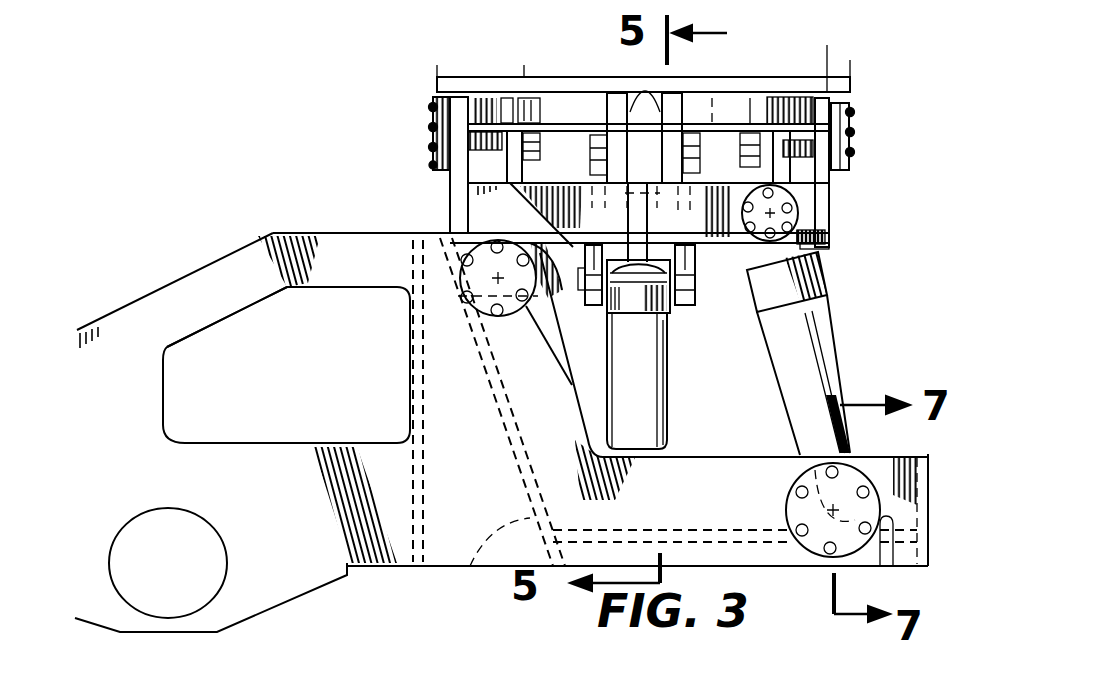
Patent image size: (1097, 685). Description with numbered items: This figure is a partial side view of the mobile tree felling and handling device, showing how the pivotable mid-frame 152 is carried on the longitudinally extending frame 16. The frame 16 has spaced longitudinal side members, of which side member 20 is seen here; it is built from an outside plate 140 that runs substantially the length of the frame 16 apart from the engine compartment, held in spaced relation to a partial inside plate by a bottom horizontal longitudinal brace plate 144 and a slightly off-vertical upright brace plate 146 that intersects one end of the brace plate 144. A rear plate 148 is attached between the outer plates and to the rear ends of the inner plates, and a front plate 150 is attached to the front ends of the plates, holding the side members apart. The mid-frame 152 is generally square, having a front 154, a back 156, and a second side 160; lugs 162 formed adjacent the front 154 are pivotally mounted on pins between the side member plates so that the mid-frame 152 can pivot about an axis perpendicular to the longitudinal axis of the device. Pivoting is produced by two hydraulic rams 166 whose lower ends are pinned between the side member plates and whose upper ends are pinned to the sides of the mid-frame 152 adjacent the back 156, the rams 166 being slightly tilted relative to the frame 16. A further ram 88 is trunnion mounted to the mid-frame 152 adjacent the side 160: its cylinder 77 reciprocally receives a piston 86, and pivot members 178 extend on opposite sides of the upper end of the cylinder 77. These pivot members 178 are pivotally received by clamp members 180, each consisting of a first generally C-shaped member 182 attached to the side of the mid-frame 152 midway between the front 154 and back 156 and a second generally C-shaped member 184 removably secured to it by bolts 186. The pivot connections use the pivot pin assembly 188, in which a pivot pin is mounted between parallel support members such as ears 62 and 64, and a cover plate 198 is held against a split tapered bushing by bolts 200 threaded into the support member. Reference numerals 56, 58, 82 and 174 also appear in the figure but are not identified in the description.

The longitudinally extending frame 16 is at (290, 232).
The longitudinal side member 20 is at (243, 243).
The cross member 56 is at (729, 104).
The top plate 58 is at (437, 80).
The ear 62 is at (495, 160).
The ear 64 is at (772, 97).
The cylinder 77 is at (668, 405).
The support post 82 is at (648, 95).
The piston 86 is at (648, 258).
The ram 88 is at (676, 431).
The outside plate 140 is at (186, 302).
The bottom horizontal longitudinal brace plate 144 is at (690, 520).
The upright brace plate 146 is at (637, 421).
The rear plate 148 is at (418, 495).
The front plate 150 is at (919, 533).
The mid-frame 152 is at (842, 186).
The front 154 is at (452, 218).
The back 156 is at (831, 213).
The second side 160 is at (822, 236).
The lug 162 is at (573, 217).
The hydraulic ram 166 is at (840, 365).
The block 174 is at (500, 165).
The pivot member 178 is at (553, 340).
The clamp member 180 is at (572, 318).
The first C-shaped member 182 is at (748, 250).
The second C-shaped member 184 is at (703, 300).
The bolt 186 is at (690, 307).
The pivot pin assembly 188 is at (432, 108).
The cover plate 198 is at (456, 297).
The bolt 200 is at (484, 312).